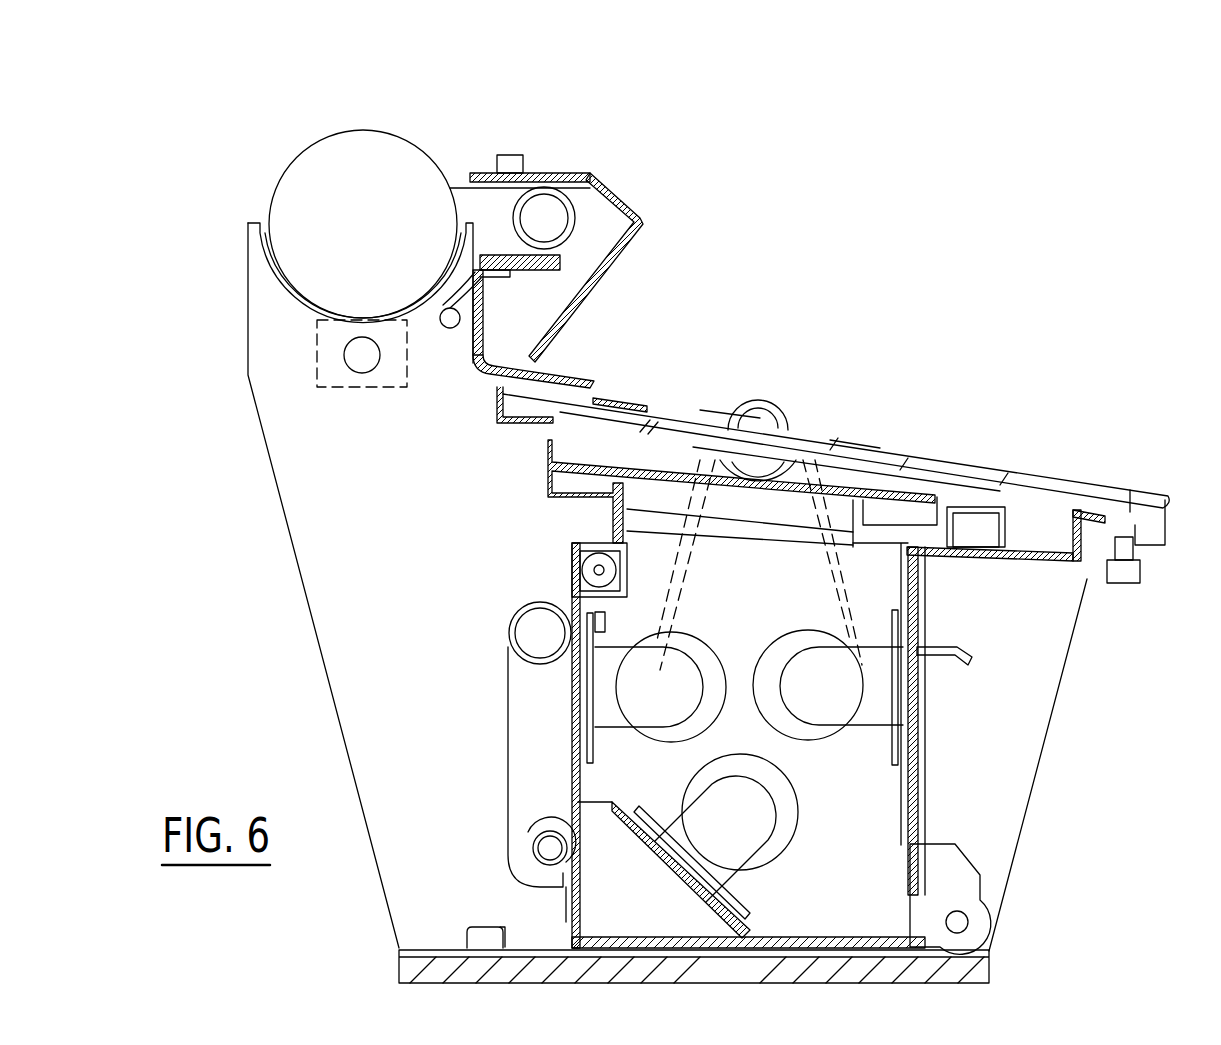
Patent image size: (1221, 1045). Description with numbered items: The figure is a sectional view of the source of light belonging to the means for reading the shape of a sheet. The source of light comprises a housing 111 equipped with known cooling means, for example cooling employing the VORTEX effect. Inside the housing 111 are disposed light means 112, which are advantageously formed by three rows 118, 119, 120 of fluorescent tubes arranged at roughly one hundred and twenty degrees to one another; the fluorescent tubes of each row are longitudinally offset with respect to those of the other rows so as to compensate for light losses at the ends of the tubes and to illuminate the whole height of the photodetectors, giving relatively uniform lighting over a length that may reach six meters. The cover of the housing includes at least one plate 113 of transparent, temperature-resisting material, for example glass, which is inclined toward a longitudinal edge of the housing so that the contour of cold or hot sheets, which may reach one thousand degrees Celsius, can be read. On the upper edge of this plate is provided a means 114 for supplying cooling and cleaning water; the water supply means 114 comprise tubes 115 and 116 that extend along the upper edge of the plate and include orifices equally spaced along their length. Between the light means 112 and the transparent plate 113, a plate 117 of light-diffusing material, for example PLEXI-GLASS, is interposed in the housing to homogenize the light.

The housing 111 is at (560, 564).
The light means 112 is at (866, 797).
The plate of transparent material 113 is at (1005, 483).
The water supply means 114 is at (612, 178).
The tube 115 is at (483, 290).
The tube 116 is at (573, 242).
The plate of light-diffusing material 117 is at (550, 480).
The row of fluorescent tubes 118 is at (795, 815).
The row of fluorescent tubes 119 is at (812, 740).
The row of fluorescent tubes 120 is at (664, 749).